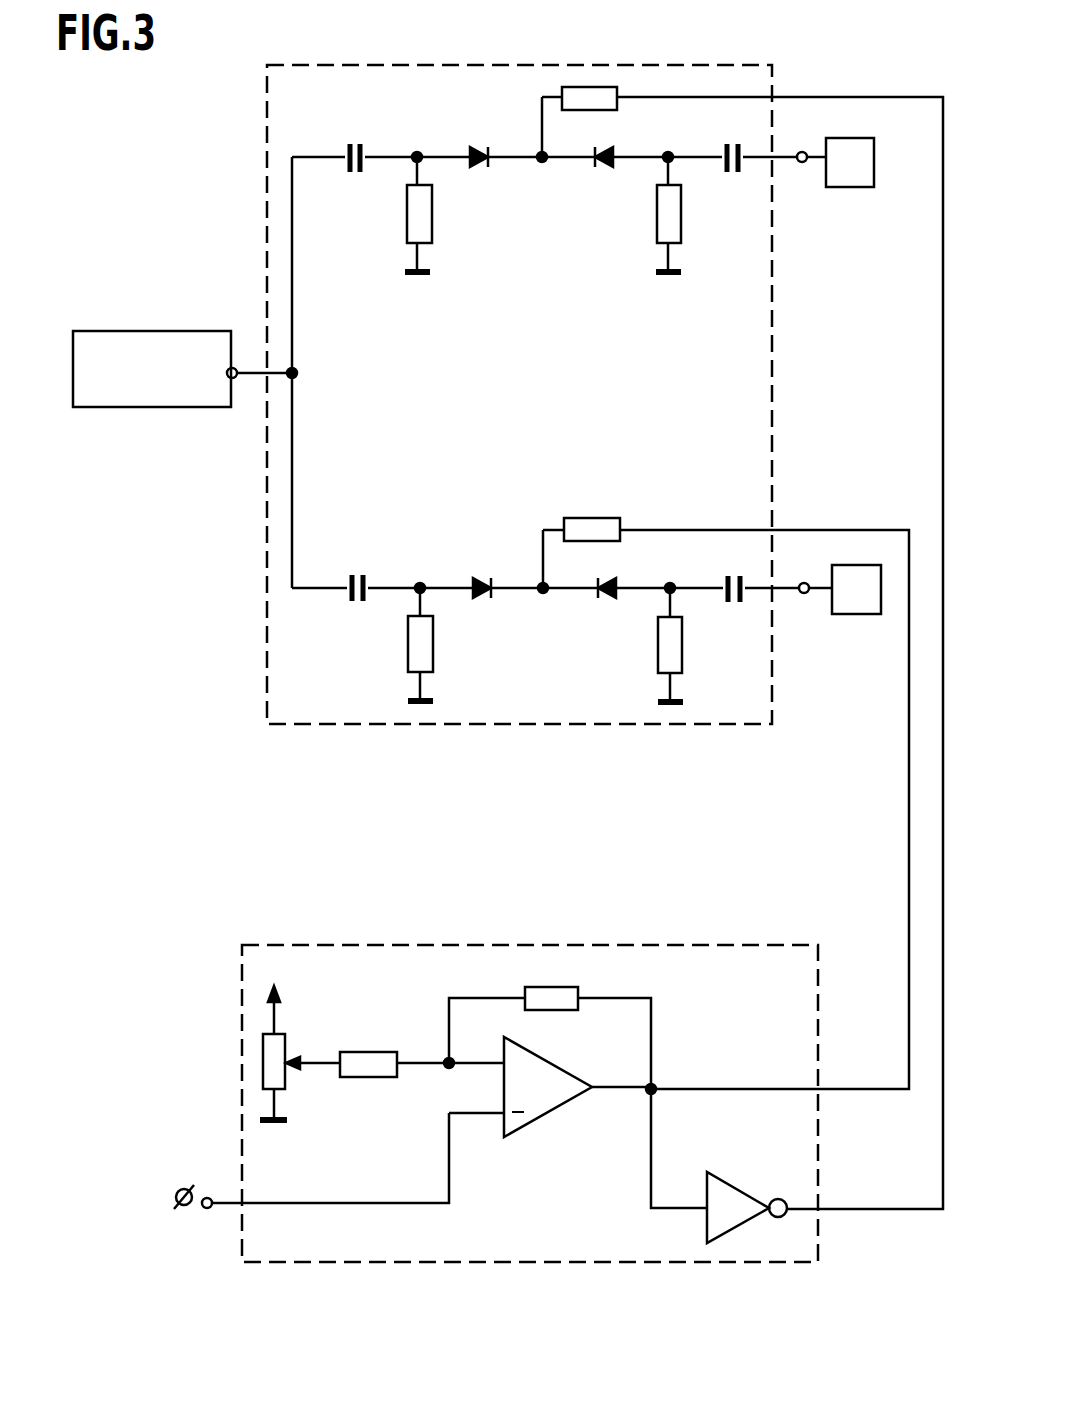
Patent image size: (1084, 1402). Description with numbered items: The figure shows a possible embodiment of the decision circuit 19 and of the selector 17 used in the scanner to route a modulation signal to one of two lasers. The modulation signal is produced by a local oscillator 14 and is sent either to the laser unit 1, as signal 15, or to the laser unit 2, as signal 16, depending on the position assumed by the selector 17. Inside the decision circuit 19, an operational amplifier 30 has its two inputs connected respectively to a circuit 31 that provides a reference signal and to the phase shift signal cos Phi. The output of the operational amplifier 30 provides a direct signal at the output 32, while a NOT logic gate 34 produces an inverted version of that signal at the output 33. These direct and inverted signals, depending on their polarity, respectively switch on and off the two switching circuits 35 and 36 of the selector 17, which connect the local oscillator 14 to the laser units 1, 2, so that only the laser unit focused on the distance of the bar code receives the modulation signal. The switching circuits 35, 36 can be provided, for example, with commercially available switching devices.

The laser unit 1 is at (856, 616).
The laser unit 2 is at (865, 188).
The local oscillator 14 is at (122, 408).
The signal 15 is at (788, 592).
The signal 16 is at (786, 160).
The selector 17 is at (445, 724).
The decision circuit 19 is at (520, 945).
The operational amplifier 30 is at (542, 1103).
The circuit for providing a reference signal 31 is at (265, 1075).
The output 32 is at (845, 1088).
The output 33 is at (872, 1212).
The NOT logic gate 34 is at (728, 1225).
The switching circuit 35 is at (538, 610).
The switching circuit 36 is at (546, 182).